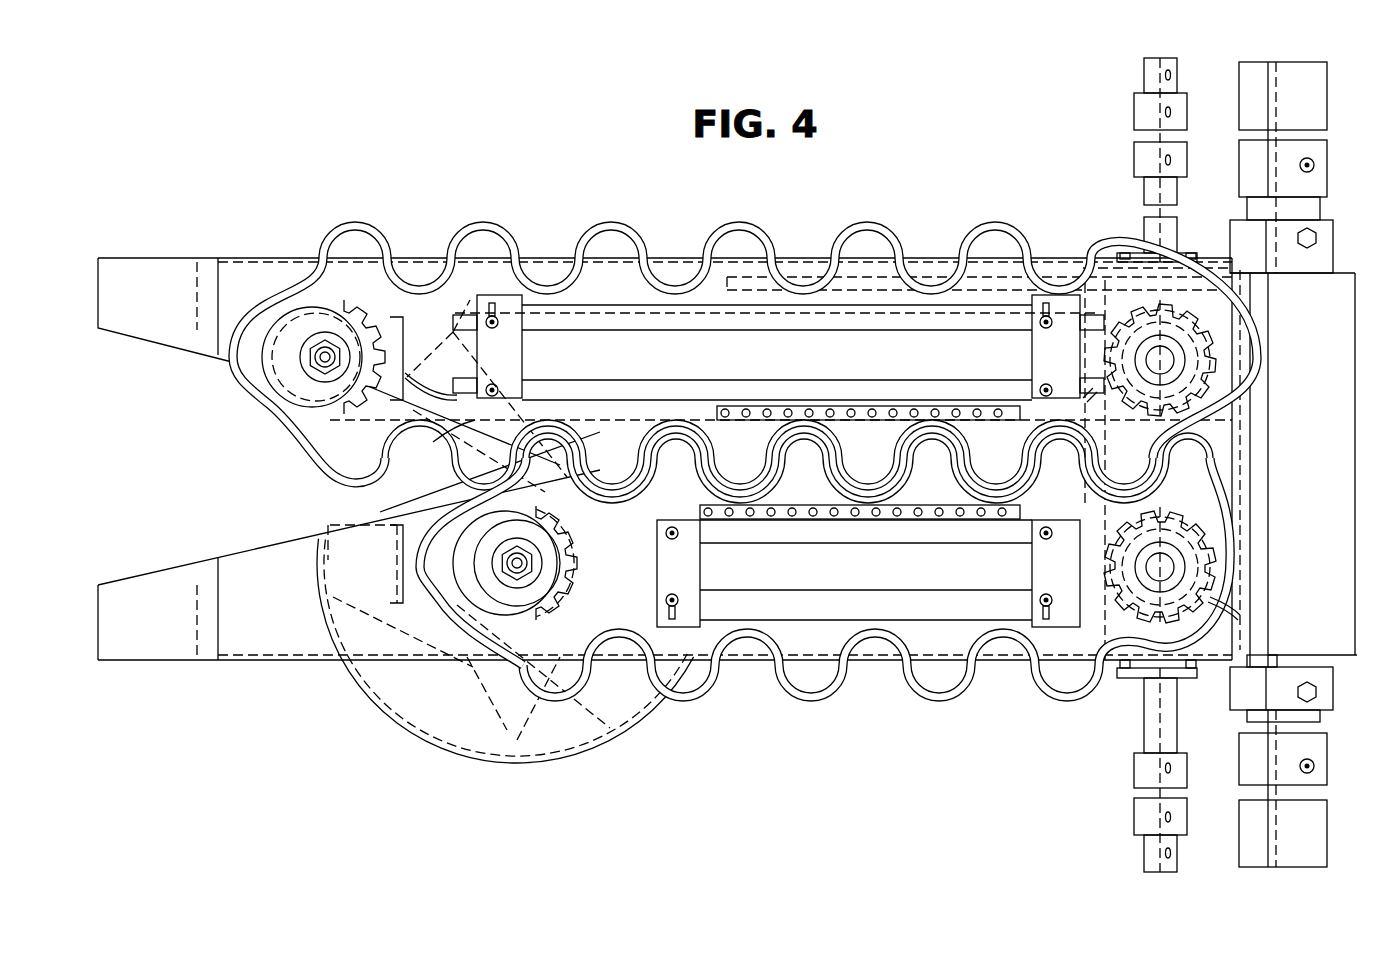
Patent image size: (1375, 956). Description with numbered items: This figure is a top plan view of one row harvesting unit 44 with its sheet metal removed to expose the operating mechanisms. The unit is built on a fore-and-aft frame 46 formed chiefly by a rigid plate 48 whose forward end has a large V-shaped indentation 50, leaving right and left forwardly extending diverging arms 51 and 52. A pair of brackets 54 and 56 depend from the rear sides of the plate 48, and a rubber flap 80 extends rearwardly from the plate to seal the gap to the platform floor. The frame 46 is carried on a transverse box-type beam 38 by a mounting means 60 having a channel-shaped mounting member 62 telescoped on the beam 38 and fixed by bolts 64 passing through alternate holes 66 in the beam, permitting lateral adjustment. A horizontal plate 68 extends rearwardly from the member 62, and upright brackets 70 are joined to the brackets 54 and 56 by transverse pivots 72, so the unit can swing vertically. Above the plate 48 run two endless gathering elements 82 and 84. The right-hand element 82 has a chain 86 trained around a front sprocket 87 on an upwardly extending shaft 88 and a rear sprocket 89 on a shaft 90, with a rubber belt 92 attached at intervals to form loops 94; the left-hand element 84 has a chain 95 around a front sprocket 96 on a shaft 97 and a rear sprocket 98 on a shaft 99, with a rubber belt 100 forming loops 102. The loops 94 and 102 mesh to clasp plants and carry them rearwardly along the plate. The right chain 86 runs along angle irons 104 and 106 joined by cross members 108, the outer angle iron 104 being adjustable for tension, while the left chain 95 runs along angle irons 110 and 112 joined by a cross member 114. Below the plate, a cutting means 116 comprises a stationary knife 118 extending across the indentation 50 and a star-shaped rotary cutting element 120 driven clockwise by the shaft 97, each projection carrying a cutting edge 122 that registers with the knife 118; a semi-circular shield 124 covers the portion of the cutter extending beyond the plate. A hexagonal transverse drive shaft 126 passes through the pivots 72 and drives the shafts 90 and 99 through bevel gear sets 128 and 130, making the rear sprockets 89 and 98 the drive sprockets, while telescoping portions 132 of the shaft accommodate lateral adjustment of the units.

The transverse box-type beam 38 is at (1320, 215).
The row harvesting unit 44 is at (238, 682).
The frame 46 is at (825, 591).
The rigid plate 48 is at (740, 344).
The V-shaped indentation 50 is at (318, 535).
The right forwardly extending arm 51 is at (135, 268).
The left forwardly extending arm 52 is at (125, 655).
The bracket 54 is at (801, 282).
The bracket 56 is at (872, 655).
The mounting means 60 is at (1232, 240).
The channel-shaped mounting member 62 is at (1325, 258).
The bolt 64 is at (1316, 238).
The hole 66 is at (1312, 165).
The horizontal plate 68 is at (1248, 662).
The upright bracket 70 is at (1107, 672).
The transverse pivot 72 is at (1135, 680).
The rubber flap 80 is at (1320, 408).
The right-hand gathering element 82 is at (285, 425).
The left-hand gathering element 84 is at (683, 700).
The chain 86 is at (765, 405).
The front sprocket 87 is at (302, 330).
The shaft 88 is at (325, 350).
The rear sprocket 89 is at (1130, 397).
The shaft 90 is at (1180, 372).
The rubber belt 92 is at (875, 472).
The sinusoidal loops 94 is at (995, 230).
The chain 95 is at (820, 522).
The front sprocket 96 is at (505, 550).
The shaft 97 is at (522, 570).
The rear sprocket 98 is at (1095, 572).
The shaft 99 is at (1175, 567).
The rubber belt 100 is at (905, 463).
The loops 102 is at (1045, 693).
The outer angle iron 104 is at (660, 322).
The angle iron 106 is at (705, 387).
The cross member 108 is at (522, 347).
The angle iron 110 is at (765, 530).
The outer angle iron 112 is at (800, 592).
The cross member 114 is at (692, 570).
The cutting means 116 is at (465, 735).
The stationary knife or shear bar 118 is at (445, 440).
The star-shaped rotary cutting element 120 is at (390, 480).
The cutting edge 122 is at (395, 465).
The semi-circular shield 124 is at (560, 730).
The transverse drive shaft 126 is at (1150, 852).
The bevel gear set 128 is at (1088, 345).
The bevel gear set 130 is at (1235, 605).
The telescoping portions 132 is at (1134, 112).